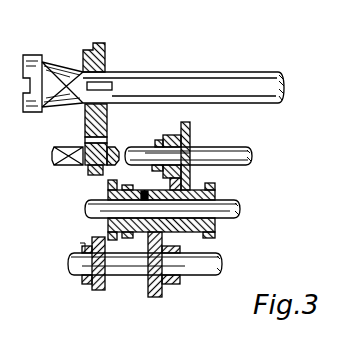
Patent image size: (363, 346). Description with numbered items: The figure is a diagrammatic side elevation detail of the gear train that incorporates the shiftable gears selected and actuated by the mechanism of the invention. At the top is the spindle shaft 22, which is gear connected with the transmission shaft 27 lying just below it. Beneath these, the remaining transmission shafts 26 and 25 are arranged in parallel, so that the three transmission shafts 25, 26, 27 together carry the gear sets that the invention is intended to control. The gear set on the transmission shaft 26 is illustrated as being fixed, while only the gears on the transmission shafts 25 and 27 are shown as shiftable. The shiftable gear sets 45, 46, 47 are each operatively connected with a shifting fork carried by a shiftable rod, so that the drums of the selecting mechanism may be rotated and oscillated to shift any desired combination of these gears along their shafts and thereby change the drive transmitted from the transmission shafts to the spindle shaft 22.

The spindle shaft 22 is at (181, 72).
The transmission shaft 25 is at (193, 274).
The transmission shaft 26 is at (232, 209).
The transmission shaft 27 is at (238, 148).
The gear set 45 is at (190, 127).
The gear set 46 is at (94, 291).
The gear set 47 is at (151, 299).